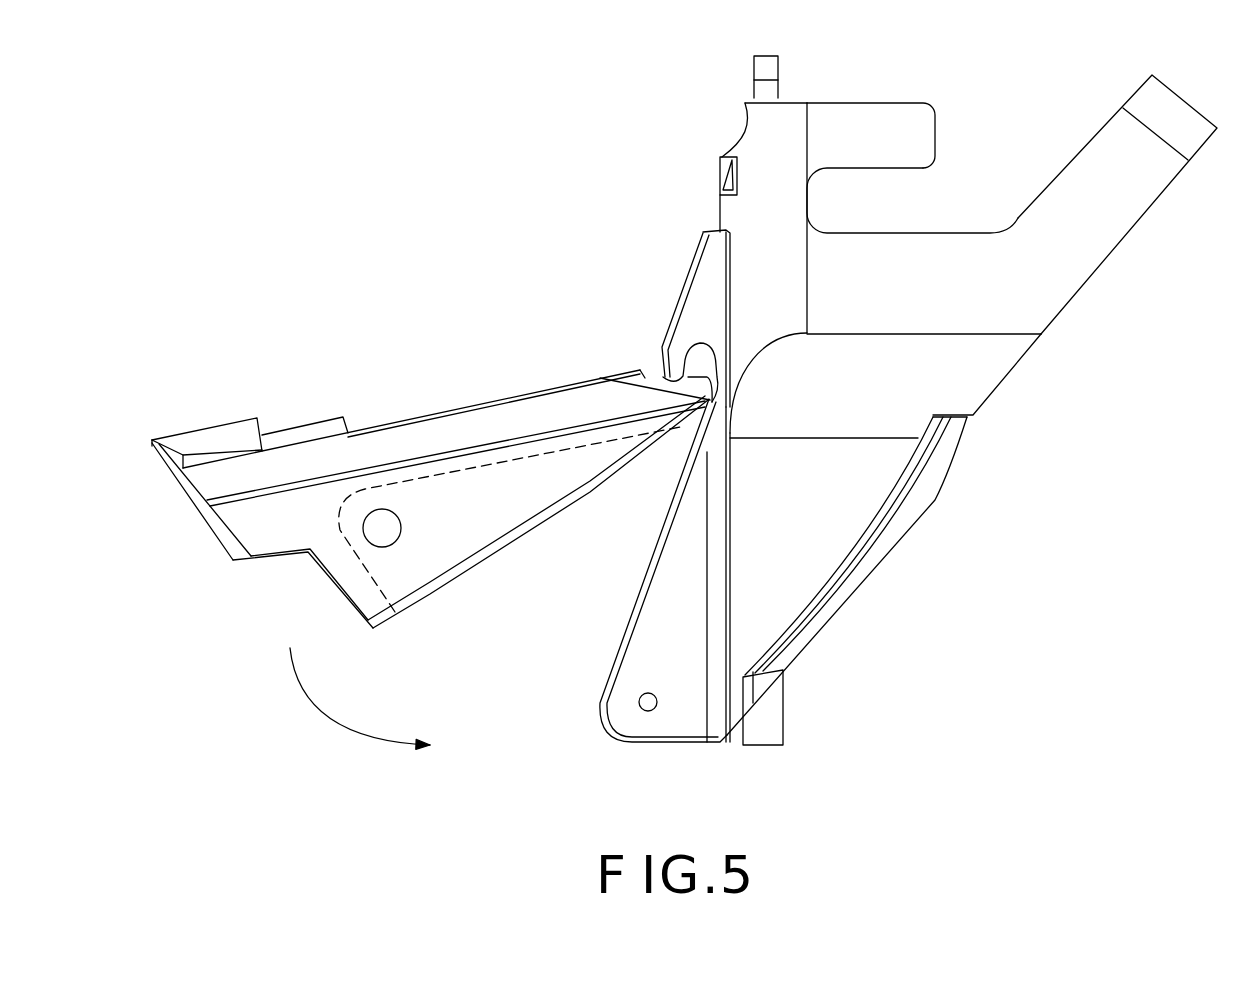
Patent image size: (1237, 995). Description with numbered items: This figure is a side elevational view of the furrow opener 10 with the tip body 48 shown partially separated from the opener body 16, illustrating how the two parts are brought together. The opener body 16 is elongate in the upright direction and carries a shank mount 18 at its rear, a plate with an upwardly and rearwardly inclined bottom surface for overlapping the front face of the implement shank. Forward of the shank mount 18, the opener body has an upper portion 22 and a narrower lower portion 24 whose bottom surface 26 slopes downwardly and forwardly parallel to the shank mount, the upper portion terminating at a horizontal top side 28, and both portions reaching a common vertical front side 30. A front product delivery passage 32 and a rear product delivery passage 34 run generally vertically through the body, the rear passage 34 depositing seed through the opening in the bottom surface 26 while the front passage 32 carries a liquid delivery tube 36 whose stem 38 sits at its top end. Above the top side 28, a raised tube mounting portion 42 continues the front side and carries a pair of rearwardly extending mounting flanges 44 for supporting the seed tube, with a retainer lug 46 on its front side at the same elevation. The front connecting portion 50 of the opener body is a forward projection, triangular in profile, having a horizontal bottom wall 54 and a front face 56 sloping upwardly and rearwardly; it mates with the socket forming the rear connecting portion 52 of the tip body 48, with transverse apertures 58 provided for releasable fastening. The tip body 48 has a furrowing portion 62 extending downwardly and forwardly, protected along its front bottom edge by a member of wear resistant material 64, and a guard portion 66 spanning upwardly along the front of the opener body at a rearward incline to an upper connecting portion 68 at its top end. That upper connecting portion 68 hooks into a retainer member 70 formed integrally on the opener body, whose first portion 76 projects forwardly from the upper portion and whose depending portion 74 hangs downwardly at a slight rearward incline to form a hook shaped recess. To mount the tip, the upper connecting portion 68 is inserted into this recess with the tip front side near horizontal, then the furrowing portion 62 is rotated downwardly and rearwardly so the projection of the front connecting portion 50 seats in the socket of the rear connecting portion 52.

The furrow opener 10 is at (352, 128).
The opener body 16 is at (965, 525).
The shank mount 18 is at (1155, 203).
The upper portion 22 is at (1013, 300).
The lower portion 24 is at (855, 493).
The bottom surface 26 is at (862, 584).
The top side 28 is at (970, 233).
The front side 30 is at (723, 597).
The front product delivery passage 32 is at (740, 82).
The rear product delivery passage 34 is at (880, 88).
The liquid delivery tube 36 is at (780, 732).
The stem 38 is at (763, 62).
The tube mounting portion 42 is at (768, 187).
The mounting flanges 44 is at (920, 122).
The retainer lug 46 is at (730, 180).
The tip body 48 is at (432, 344).
The front connecting portion 50 is at (667, 630).
The rear connecting portion 52 is at (467, 515).
The bottom wall 54 is at (360, 573).
The front face 56 is at (505, 463).
The transverse apertures 58 is at (365, 537).
The furrowing portion 62 is at (207, 512).
The member of wear resistant material 64 is at (220, 430).
The guard portion 66 is at (520, 395).
The upper connecting portion 68 is at (600, 380).
The retainer member 70 is at (710, 270).
The depending portion 74 is at (667, 362).
The first portion 76 is at (700, 332).